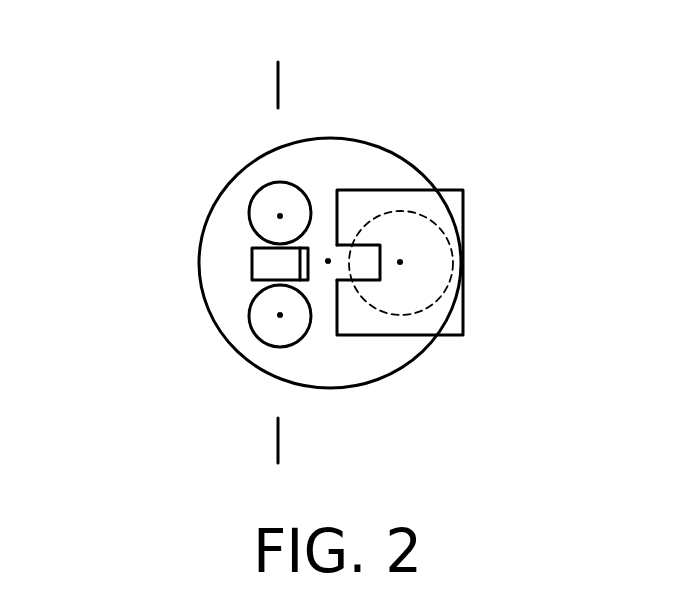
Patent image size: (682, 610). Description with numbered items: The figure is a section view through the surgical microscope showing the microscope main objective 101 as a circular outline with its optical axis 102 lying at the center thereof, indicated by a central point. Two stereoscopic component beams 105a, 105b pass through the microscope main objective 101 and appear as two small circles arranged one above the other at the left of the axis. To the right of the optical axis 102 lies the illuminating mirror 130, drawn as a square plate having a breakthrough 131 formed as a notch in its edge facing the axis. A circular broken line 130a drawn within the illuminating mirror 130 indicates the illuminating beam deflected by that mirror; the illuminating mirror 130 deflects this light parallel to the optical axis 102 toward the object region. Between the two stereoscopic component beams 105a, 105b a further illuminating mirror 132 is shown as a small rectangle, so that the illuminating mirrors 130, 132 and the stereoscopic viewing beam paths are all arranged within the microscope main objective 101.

The microscope main objective 101 is at (363, 148).
The optical axis 102 is at (328, 262).
The stereoscopic component beam 105a is at (280, 216).
The stereoscopic component beam 105b is at (280, 315).
The illuminating mirror 130 is at (497, 281).
The circular broken line 130a is at (443, 333).
The breakthrough 131 is at (372, 279).
The illuminating mirror 132 is at (267, 262).